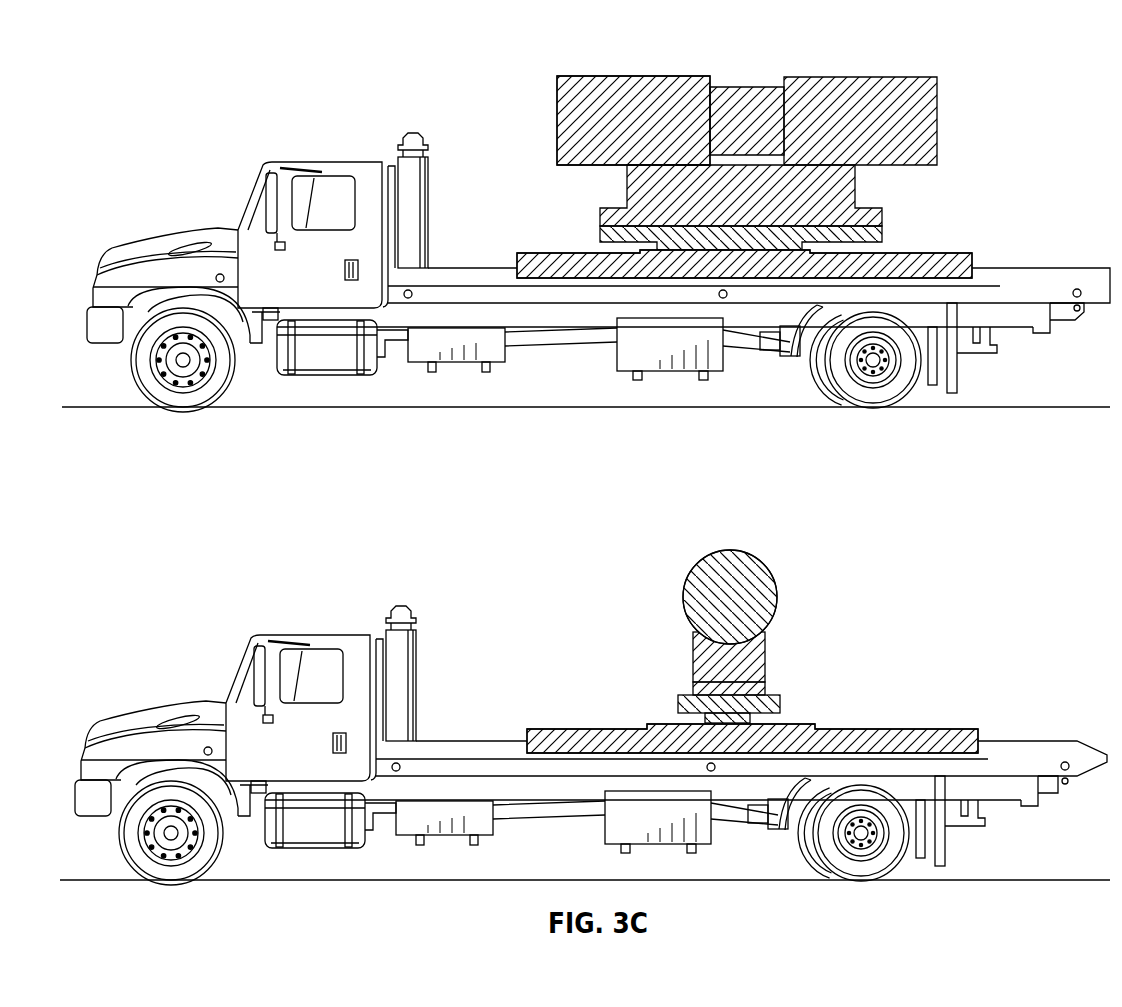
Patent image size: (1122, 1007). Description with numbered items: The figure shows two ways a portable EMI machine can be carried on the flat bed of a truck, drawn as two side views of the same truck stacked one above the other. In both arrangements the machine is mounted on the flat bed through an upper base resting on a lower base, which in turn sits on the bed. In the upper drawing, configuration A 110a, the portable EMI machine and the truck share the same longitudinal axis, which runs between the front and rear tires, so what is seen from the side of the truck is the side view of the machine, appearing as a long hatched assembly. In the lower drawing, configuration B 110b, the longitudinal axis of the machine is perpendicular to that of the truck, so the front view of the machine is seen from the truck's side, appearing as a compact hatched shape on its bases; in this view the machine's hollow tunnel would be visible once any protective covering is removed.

The configuration A 110a is at (721, 130).
The configuration B 110b is at (716, 611).